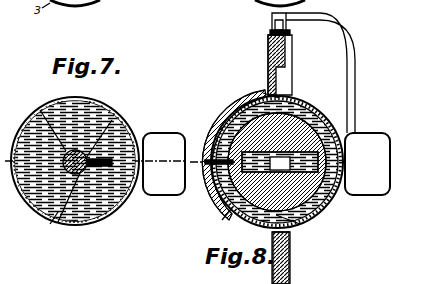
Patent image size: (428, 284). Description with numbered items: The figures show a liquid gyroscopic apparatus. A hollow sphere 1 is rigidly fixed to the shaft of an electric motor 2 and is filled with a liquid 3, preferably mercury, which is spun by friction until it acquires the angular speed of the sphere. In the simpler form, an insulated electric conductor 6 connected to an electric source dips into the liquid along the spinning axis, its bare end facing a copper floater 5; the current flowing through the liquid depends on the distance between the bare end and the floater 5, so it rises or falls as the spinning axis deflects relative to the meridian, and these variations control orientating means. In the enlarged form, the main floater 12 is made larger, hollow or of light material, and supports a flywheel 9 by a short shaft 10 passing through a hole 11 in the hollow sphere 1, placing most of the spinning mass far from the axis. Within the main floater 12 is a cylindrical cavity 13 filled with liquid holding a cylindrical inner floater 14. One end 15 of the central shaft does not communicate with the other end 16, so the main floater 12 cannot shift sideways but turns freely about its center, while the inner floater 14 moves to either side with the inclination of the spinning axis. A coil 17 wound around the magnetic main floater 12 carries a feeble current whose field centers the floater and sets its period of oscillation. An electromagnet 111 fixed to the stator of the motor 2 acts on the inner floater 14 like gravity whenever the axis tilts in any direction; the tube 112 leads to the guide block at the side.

In FIG. 7, the hollow sphere 1 is at (112, 115).
In FIG. 8, the hollow sphere 1 is at (296, 108).
In FIG. 7, the electric motor 2 is at (162, 180).
In FIG. 8, the electric motor 2 is at (367, 132).
In FIG. 7, the liquid 3 is at (55, 222).
In FIG. 8, the liquid 3 is at (222, 222).
In FIG. 7, the floater 5 is at (45, 112).
In FIG. 7, the insulated electric conductor 6 is at (127, 138).
In FIG. 8, the flywheel 9 is at (268, 52).
In FIG. 8, the short shaft 10 is at (232, 182).
In FIG. 8, the hole 11 is at (213, 140).
In FIG. 8, the main floater 12 is at (312, 124).
In FIG. 8, the cylindrical cavity 13 is at (333, 204).
In FIG. 8, the inner floater 14 is at (318, 212).
In FIG. 8, the end of the central shaft 15 is at (340, 164).
In FIG. 8, the other end of the central shaft 16 is at (228, 124).
In FIG. 8, the coil 17 is at (266, 92).
In FIG. 8, the electromagnet 111 is at (270, 28).
In FIG. 8, the tube 112 is at (334, 28).